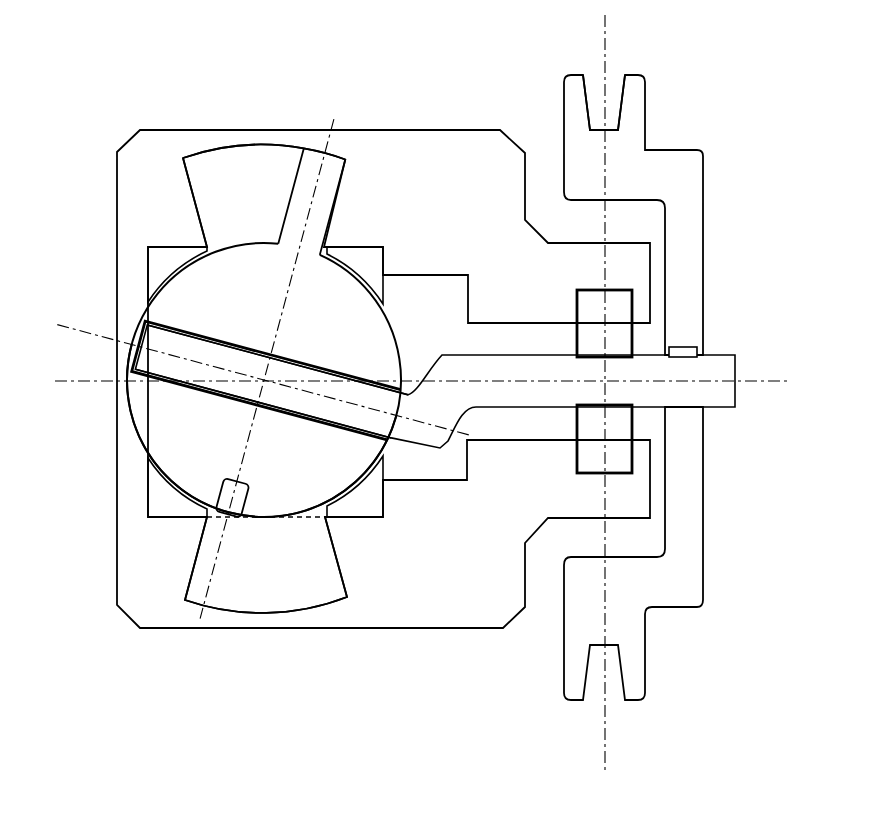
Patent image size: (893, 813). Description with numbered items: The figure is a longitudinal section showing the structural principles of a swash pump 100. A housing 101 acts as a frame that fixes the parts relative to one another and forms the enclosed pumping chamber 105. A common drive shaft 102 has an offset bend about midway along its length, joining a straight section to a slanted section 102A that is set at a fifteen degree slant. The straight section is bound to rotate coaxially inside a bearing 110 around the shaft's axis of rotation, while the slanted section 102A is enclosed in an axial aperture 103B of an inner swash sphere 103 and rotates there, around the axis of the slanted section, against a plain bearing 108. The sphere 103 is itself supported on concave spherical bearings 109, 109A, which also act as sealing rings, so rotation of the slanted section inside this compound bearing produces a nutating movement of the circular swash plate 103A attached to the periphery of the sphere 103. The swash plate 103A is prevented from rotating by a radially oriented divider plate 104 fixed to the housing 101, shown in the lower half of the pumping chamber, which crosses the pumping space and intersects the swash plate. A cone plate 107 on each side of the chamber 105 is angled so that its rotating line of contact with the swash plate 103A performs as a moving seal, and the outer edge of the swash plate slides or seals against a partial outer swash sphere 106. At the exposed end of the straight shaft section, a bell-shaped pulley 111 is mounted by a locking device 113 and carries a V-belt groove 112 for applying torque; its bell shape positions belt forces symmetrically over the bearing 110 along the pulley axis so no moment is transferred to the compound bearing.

The swash pump 100 is at (178, 42).
The housing 101 is at (478, 130).
The common drive shaft 102 is at (487, 377).
The slanted section 102A is at (220, 462).
The inner swash sphere 103 is at (193, 313).
The swash plate 103A is at (353, 167).
The axial aperture 103B is at (240, 440).
The divider plate 104 is at (233, 595).
The pumping chamber 105 is at (240, 153).
The partial outer swash sphere 106 is at (300, 150).
The cone plate 107 is at (194, 200).
The plain bearing 108 is at (238, 392).
The concave spherical bearing 109 is at (167, 512).
The concave spherical bearing 109A is at (368, 507).
The bearing 110 is at (633, 282).
The pulley 111 is at (703, 150).
The V-belt groove 112 is at (637, 73).
The locking device 113 is at (683, 337).